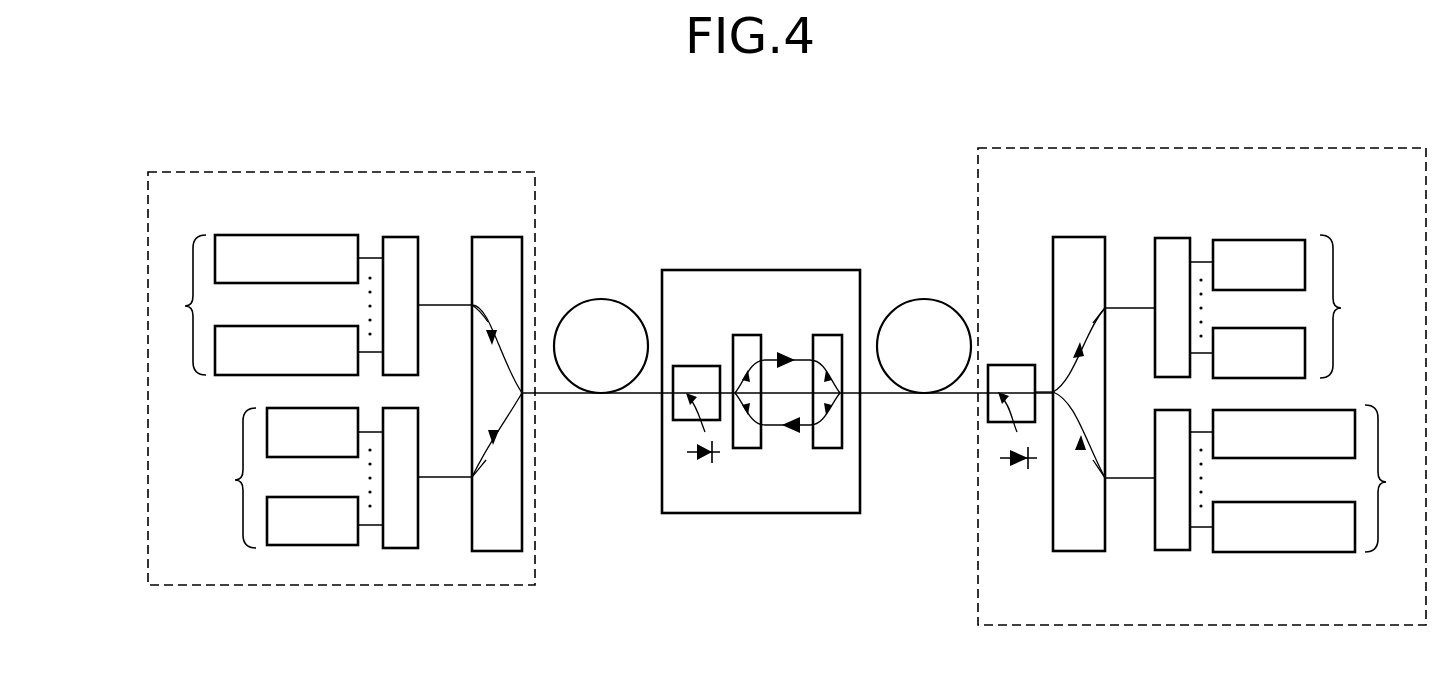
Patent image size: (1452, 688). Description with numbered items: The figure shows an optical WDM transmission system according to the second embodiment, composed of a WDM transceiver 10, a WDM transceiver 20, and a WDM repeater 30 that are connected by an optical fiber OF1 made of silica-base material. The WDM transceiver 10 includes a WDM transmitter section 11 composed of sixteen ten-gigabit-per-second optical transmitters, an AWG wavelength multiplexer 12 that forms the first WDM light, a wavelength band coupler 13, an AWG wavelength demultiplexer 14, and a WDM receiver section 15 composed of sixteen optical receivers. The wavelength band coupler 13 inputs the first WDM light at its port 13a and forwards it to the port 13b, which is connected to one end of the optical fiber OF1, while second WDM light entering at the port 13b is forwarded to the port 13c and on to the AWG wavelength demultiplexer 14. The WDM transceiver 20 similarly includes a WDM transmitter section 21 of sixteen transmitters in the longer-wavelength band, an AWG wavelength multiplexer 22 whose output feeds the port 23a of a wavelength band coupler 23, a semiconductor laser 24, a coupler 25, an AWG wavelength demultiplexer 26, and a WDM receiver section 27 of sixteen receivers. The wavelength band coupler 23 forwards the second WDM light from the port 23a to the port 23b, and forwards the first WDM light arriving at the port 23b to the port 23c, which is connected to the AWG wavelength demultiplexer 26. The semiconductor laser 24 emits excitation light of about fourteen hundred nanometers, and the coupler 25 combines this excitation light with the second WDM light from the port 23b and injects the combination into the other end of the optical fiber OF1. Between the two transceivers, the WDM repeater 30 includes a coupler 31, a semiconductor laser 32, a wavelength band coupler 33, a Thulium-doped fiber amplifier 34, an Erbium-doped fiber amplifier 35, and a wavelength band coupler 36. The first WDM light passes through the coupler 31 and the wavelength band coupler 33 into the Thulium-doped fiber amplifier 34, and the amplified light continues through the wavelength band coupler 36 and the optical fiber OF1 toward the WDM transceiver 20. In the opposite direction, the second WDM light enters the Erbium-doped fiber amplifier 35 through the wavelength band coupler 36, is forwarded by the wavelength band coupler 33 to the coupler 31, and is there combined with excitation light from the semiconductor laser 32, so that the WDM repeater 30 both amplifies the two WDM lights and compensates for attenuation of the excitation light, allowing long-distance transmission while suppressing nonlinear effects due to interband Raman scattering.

The WDM transceiver 10 is at (343, 172).
The WDM transmitter section 11 is at (266, 305).
The AWG wavelength multiplexer 12 is at (405, 237).
The wavelength band coupler 13 is at (496, 237).
The port 13a is at (480, 312).
The port 13b is at (522, 393).
The port 13c is at (474, 476).
The AWG wavelength demultiplexer 14 is at (405, 408).
The WDM receiver section 15 is at (289, 478).
The optical fiber OF1 is at (601, 299).
The WDM transceiver 20 is at (1173, 148).
The WDM transmitter section 21 is at (1306, 478).
The AWG wavelength multiplexer 22 is at (1165, 410).
The wavelength band coupler 23 is at (1077, 237).
The port 23a is at (1105, 478).
The port 23b is at (1049, 386).
The port 23c is at (1105, 308).
The semiconductor laser 24 is at (1020, 470).
The coupler 25 is at (1011, 365).
The AWG wavelength demultiplexer 26 is at (1175, 238).
The WDM receiver section 27 is at (1284, 306).
The WDM repeater 30 is at (760, 270).
The coupler 31 is at (700, 366).
The semiconductor laser 32 is at (705, 464).
The wavelength band coupler 33 is at (748, 335).
The Thulium-doped fiber amplifier 34 is at (786, 356).
The Erbium-doped fiber amplifier 35 is at (786, 430).
The wavelength band coupler 36 is at (830, 335).